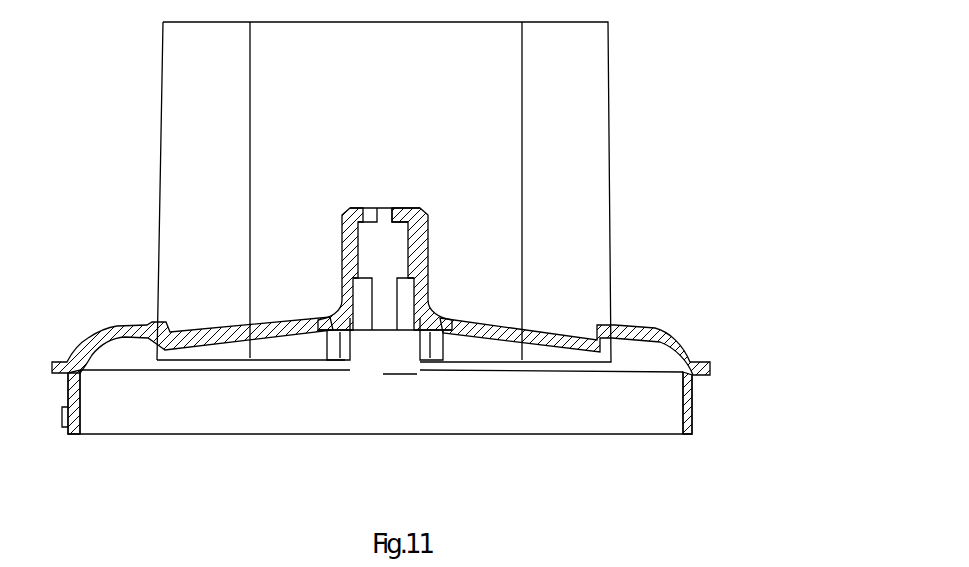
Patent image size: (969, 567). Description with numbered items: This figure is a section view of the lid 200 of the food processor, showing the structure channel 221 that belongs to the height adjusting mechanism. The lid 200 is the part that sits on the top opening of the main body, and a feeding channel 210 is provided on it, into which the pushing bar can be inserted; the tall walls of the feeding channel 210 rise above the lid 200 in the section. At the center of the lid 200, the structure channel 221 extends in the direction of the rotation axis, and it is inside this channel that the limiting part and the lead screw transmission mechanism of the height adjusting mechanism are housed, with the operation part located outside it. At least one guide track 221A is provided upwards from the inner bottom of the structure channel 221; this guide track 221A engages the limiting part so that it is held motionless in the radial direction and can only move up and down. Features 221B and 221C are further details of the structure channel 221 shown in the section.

The feeding channel 210 is at (502, 111).
The lid 200 is at (728, 405).
The structure channel 221 is at (430, 255).
The guide track 221A is at (408, 315).
The nozzle top 221B is at (430, 212).
The top notch 221C is at (362, 206).